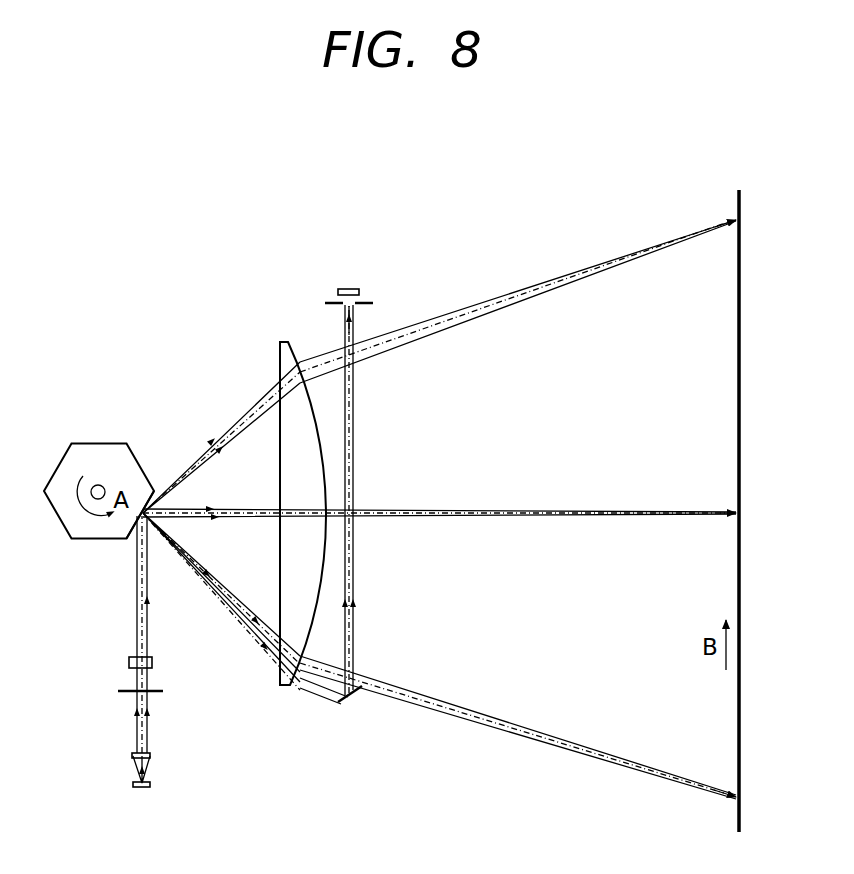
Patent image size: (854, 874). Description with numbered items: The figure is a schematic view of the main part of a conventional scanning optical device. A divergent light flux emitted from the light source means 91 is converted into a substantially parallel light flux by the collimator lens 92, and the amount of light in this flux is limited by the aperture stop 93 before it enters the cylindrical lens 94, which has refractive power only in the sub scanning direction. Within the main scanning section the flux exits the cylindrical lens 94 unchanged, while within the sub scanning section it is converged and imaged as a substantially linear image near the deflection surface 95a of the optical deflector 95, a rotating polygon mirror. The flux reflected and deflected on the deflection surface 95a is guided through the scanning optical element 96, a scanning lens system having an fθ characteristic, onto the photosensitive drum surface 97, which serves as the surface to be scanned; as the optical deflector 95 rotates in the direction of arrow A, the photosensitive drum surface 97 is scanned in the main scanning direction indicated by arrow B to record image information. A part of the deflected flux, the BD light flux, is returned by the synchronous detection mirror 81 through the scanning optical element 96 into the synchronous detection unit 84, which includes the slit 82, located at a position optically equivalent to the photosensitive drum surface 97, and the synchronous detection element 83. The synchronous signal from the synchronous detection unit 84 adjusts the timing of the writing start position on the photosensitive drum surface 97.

The synchronous detection mirror 81 is at (352, 697).
The slit 82 is at (370, 302).
The synchronous detection element 83 is at (349, 289).
The synchronous detection unit 84 is at (370, 236).
The light source means 91 is at (138, 789).
The collimator lens 92 is at (131, 756).
The aperture stop 93 is at (128, 692).
The cylindrical lens 94 is at (128, 661).
The optical deflector 95 is at (98, 452).
The deflection surface 95a is at (151, 490).
The scanning optical element 96 is at (290, 342).
The photosensitive drum surface 97 is at (741, 581).